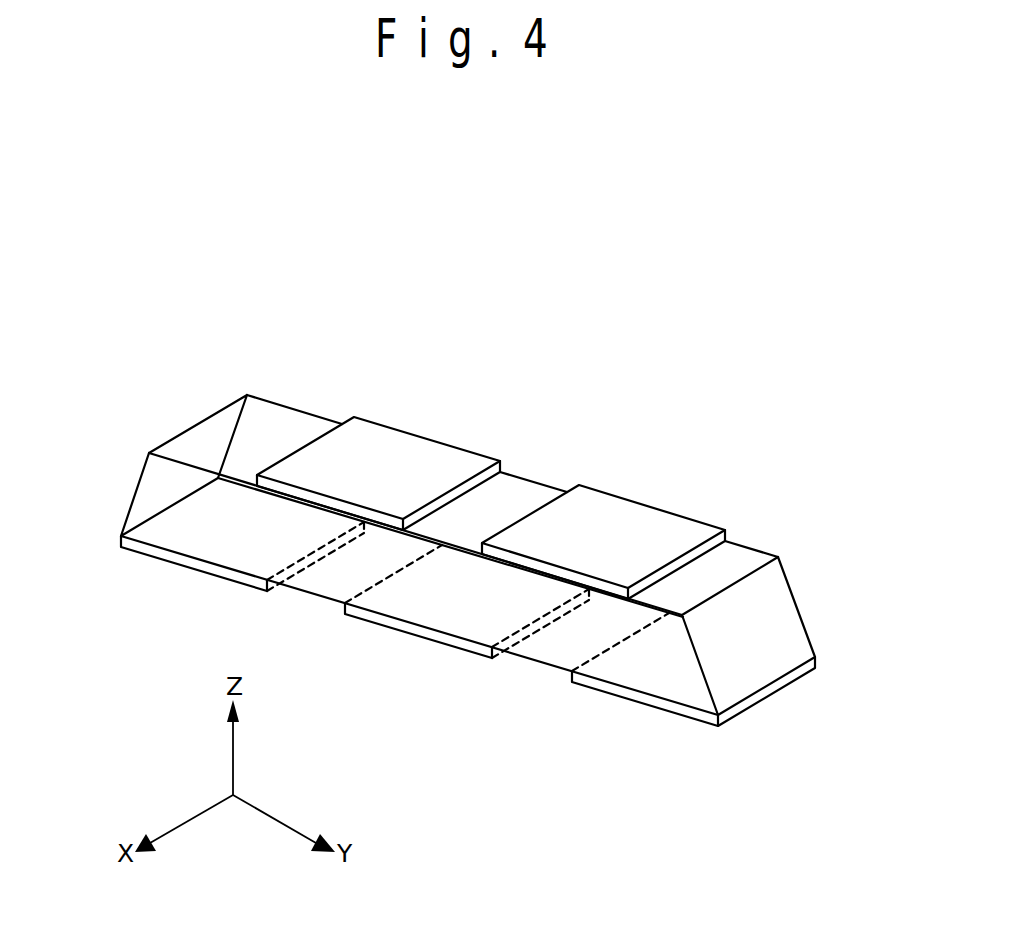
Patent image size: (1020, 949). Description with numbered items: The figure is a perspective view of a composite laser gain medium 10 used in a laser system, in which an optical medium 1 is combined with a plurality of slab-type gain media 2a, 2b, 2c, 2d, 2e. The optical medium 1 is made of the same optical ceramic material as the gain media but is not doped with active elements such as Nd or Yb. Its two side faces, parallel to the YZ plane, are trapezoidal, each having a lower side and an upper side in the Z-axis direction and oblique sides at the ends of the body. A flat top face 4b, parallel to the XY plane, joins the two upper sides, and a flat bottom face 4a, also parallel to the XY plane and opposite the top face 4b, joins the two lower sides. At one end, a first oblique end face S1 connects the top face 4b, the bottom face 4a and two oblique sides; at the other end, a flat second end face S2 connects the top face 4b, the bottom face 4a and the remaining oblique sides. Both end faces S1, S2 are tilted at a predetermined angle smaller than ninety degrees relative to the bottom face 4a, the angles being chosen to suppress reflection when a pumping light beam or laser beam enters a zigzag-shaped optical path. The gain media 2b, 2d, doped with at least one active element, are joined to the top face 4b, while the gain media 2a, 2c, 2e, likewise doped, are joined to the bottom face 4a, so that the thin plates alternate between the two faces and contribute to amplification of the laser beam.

The laser gain medium 10 is at (545, 436).
The optical medium 1 is at (233, 522).
The bottom face 4a is at (532, 672).
The top face 4b is at (261, 428).
The first oblique end face S1 is at (138, 474).
The second end face S2 is at (756, 648).
The gain medium 2a is at (197, 586).
The gain medium 2b is at (397, 458).
The gain medium 2c is at (398, 644).
The gain medium 2d is at (637, 531).
The gain medium 2e is at (627, 710).